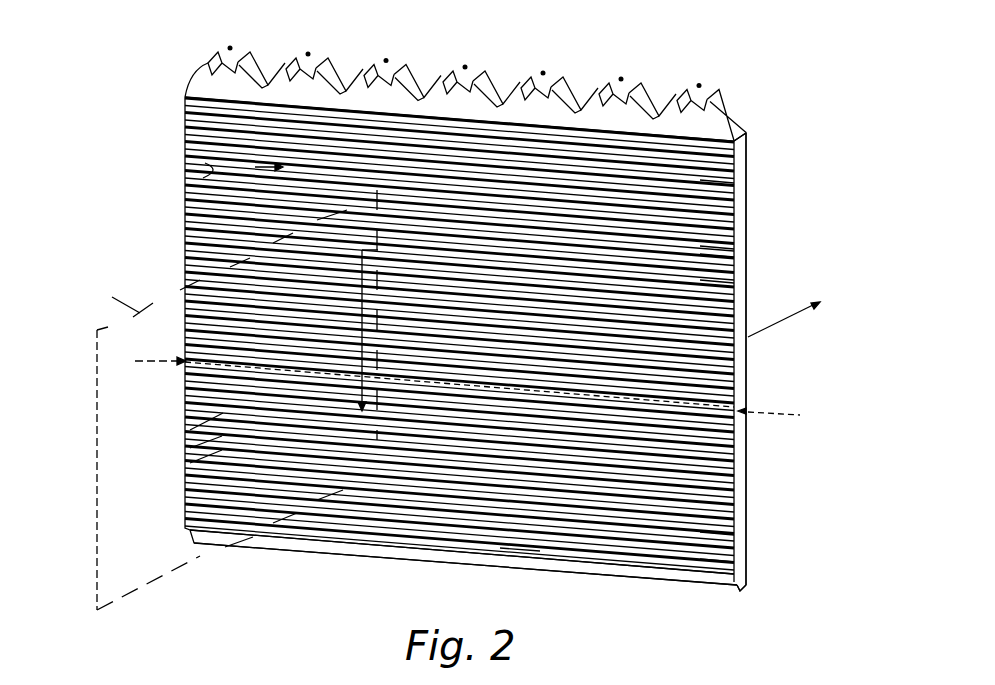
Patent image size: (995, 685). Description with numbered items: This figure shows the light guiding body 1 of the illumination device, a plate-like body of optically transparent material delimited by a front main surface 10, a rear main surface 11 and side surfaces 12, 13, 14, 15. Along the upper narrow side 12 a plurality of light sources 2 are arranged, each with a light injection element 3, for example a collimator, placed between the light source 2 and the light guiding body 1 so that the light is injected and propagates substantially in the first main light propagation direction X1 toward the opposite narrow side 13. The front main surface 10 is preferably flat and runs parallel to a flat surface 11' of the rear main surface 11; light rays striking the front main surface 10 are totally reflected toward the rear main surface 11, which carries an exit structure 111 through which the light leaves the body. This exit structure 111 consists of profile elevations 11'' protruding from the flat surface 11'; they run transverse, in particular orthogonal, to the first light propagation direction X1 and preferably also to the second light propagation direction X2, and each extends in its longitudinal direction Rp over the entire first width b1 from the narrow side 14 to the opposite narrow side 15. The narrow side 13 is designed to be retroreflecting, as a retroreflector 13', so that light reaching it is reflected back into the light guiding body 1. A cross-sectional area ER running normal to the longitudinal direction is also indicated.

The light guiding body 1 is at (185, 133).
The light source 2 is at (232, 46).
The light injection element 3 is at (237, 82).
The front main surface 10 is at (750, 477).
The rear main surface 11 is at (419, 330).
The flat surface 11' is at (782, 359).
The profile elevation 11'' is at (614, 418).
The exit structure 111 is at (190, 463).
The narrow side 12 is at (722, 137).
The narrow side 13 is at (520, 574).
The retroreflector 13' is at (807, 574).
The narrow side 14 is at (740, 513).
The narrow side 15 is at (185, 241).
The longitudinal direction of the profile elevation Rp is at (185, 175).
The cross-sectional area ER is at (115, 296).
The first main light propagation direction X1 is at (307, 338).
The second light propagation direction X2 is at (796, 322).
The first width b1 is at (492, 388).